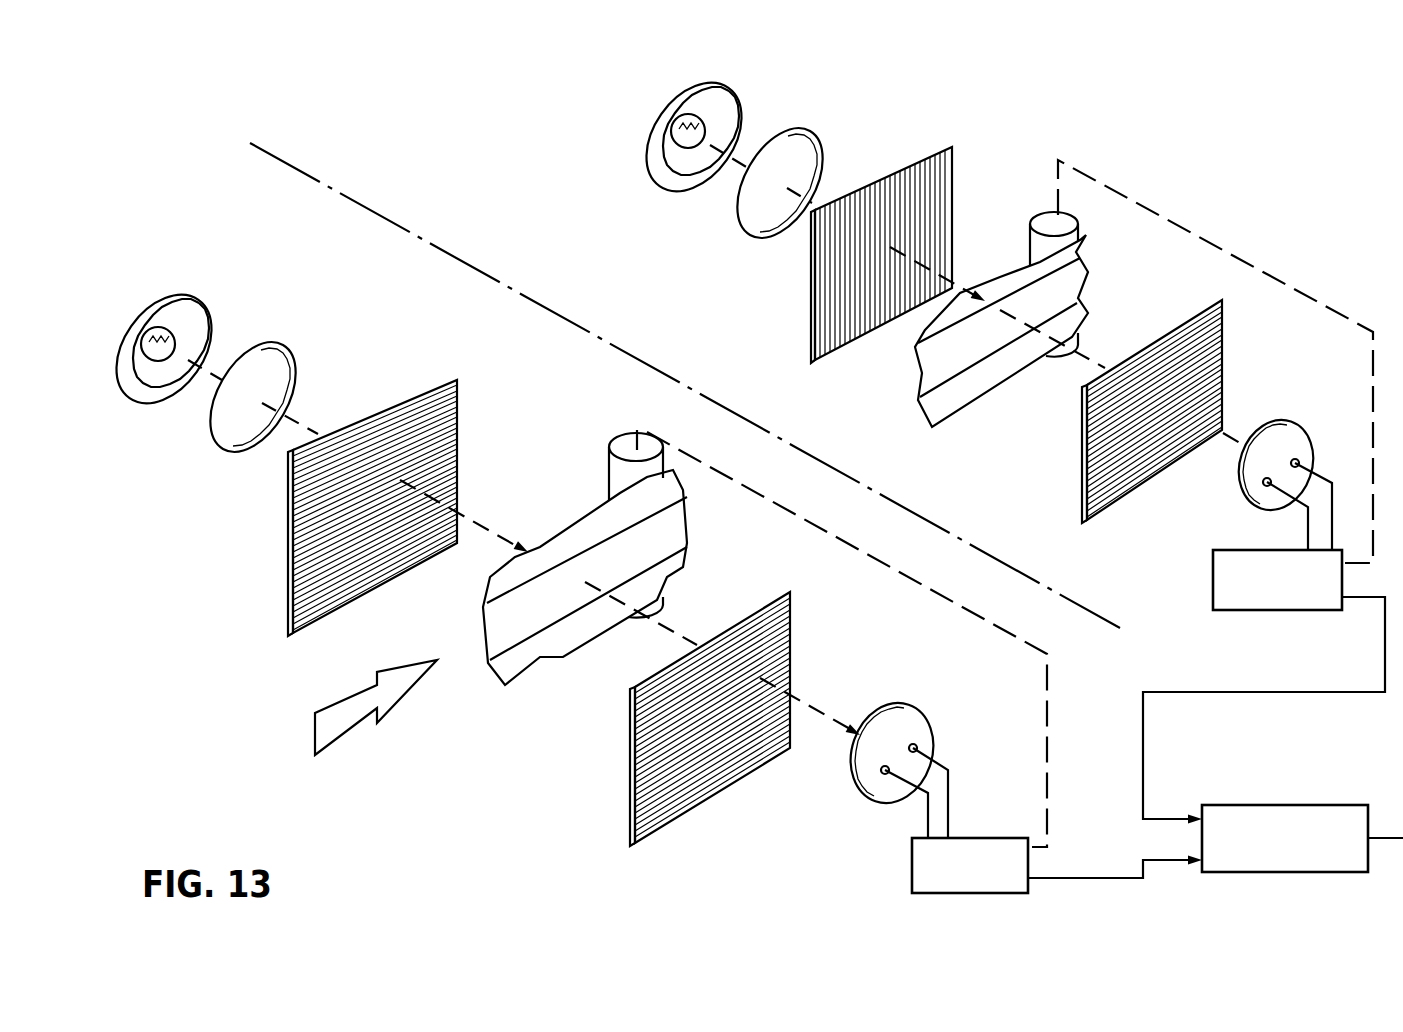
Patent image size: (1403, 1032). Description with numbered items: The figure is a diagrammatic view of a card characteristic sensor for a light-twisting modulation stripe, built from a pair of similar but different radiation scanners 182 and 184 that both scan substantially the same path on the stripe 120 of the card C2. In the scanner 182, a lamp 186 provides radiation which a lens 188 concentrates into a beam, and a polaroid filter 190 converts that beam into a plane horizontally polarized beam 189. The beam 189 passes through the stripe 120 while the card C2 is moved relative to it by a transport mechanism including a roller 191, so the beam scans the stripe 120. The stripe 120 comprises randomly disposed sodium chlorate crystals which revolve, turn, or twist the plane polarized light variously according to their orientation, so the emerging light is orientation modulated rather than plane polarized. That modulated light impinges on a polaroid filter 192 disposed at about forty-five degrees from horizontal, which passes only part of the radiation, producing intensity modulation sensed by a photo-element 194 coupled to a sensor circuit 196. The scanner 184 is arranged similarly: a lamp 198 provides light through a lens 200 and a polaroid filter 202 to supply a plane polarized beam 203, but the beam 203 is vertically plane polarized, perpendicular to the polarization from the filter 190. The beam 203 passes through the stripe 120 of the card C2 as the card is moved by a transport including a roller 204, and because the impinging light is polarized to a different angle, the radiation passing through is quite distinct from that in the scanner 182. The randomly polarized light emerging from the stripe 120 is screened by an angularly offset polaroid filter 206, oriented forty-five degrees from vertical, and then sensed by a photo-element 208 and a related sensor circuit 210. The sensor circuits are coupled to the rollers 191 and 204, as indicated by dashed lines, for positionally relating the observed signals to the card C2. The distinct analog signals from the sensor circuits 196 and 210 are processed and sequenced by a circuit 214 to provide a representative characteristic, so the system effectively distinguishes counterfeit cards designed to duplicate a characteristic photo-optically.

The radiation scanner 182 is at (172, 425).
The radiation scanner 184 is at (805, 108).
The lamp 186 is at (161, 297).
The lens 188 is at (290, 362).
The plane horizontally polarized beam 189 is at (484, 525).
The polaroid filter 190 is at (455, 426).
The roller 191 is at (667, 600).
The polaroid filter 192 is at (633, 780).
The photo-element 194 is at (890, 705).
The sensor circuit 196 is at (912, 866).
The lamp 198 is at (735, 95).
The lens 200 is at (770, 235).
The polaroid filter 202 is at (955, 176).
The plane polarized beam 203 is at (966, 286).
The roller 204 is at (1044, 359).
The polaroid filter 206 is at (1208, 361).
The photo-element 208 is at (1248, 495).
The sensor circuit 210 is at (1213, 585).
The sequencer circuit 214 is at (1237, 805).
The stripe 120 is at (682, 526).
The card C2 is at (580, 512).